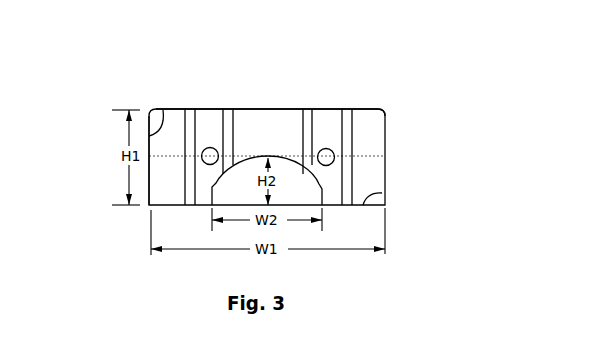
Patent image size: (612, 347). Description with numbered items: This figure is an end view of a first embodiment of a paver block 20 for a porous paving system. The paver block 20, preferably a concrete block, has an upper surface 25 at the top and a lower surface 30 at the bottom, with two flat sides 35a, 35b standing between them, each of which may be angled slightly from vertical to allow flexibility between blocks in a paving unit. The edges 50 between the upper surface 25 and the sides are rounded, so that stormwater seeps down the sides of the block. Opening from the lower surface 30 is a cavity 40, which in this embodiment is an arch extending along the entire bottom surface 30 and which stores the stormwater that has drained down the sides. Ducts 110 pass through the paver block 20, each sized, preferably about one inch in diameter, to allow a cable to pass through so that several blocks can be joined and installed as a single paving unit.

The paver block 20 is at (385, 97).
The upper surface 25 is at (293, 109).
The lower surface 30 is at (382, 193).
The flat side 35a is at (166, 120).
The flat side 35b is at (385, 133).
The cavity 40 is at (243, 178).
The edges 50 is at (155, 110).
The ducts 110 is at (338, 162).